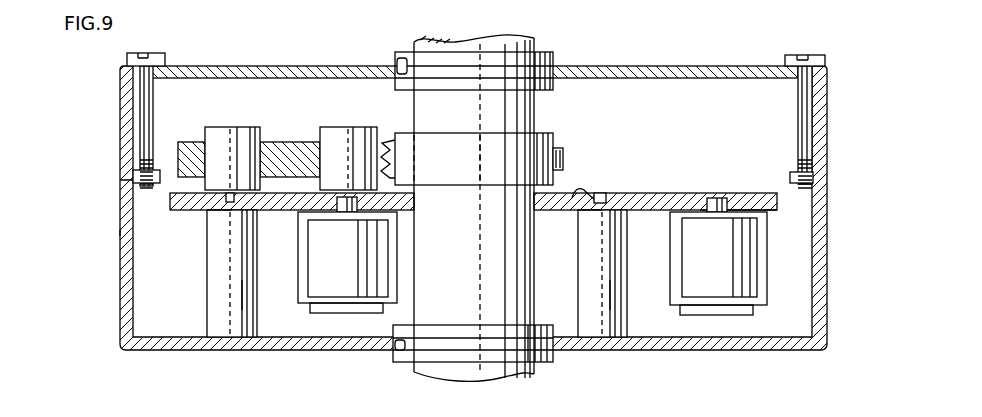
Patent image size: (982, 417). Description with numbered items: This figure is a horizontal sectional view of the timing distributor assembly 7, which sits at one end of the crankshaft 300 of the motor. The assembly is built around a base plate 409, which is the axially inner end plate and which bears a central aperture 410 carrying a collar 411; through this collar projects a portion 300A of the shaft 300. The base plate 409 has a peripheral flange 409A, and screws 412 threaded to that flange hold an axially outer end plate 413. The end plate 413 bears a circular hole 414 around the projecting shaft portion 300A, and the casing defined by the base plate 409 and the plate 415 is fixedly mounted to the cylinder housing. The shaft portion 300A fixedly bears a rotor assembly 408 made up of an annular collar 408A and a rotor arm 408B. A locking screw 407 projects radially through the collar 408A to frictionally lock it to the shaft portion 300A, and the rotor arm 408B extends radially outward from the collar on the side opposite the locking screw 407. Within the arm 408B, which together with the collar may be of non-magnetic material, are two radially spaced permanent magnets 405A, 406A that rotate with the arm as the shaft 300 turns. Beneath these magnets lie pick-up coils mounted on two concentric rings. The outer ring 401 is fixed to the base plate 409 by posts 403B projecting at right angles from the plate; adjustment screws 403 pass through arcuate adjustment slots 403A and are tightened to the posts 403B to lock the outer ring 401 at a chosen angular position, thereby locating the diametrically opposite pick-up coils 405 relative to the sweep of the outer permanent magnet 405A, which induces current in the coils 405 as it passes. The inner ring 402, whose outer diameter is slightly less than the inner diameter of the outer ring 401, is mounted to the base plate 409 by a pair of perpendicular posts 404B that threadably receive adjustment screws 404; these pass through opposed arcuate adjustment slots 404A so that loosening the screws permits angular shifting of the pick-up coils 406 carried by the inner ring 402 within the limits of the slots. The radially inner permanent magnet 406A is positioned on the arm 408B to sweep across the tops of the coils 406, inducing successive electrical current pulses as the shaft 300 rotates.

The timing distributor assembly 7 is at (868, 144).
The crankshaft 300 is at (461, 391).
The shaft portion 300A is at (523, 38).
The outer ring 401 is at (764, 193).
The inner ring 402 is at (660, 178).
The adjustment screws 403 is at (222, 198).
The arcuate adjustment slots 403A is at (229, 205).
The posts 403B is at (240, 297).
The adjustment screws 404 is at (578, 189).
The arcuate adjustment slots 404A is at (604, 207).
The posts 404B is at (645, 304).
The pick-up coils 405 is at (715, 266).
The permanent magnet 405A is at (233, 140).
The pick-up coils 406 is at (347, 266).
The permanent magnet 406A is at (350, 140).
The locking screw 407 is at (563, 156).
The rotor assembly 408 is at (555, 130).
The annular collar 408A is at (552, 139).
The rotor arm 408B is at (292, 152).
The base plate 409 is at (314, 350).
The peripheral flange 409A is at (120, 230).
The central aperture 410 is at (405, 350).
The collar 411 is at (545, 362).
The screws 412 is at (153, 118).
The end plate 413 is at (752, 66).
The circular hole 414 is at (394, 60).
The plate 415 is at (407, 66).